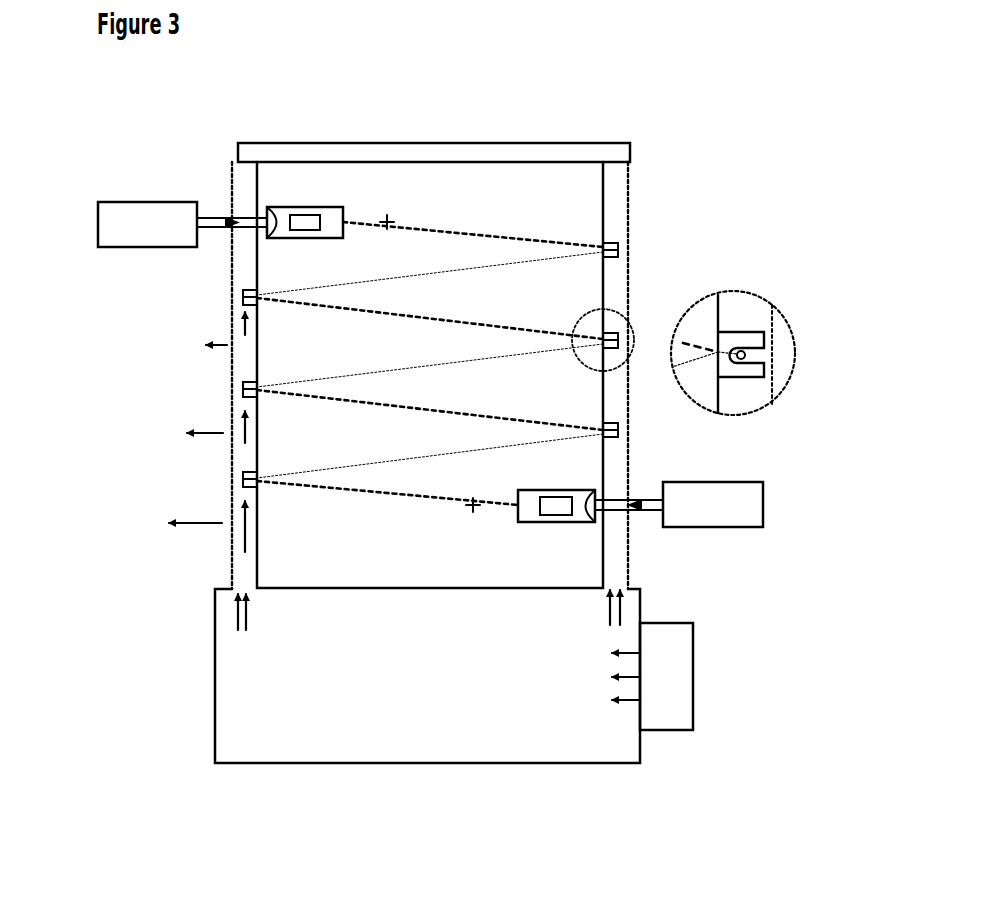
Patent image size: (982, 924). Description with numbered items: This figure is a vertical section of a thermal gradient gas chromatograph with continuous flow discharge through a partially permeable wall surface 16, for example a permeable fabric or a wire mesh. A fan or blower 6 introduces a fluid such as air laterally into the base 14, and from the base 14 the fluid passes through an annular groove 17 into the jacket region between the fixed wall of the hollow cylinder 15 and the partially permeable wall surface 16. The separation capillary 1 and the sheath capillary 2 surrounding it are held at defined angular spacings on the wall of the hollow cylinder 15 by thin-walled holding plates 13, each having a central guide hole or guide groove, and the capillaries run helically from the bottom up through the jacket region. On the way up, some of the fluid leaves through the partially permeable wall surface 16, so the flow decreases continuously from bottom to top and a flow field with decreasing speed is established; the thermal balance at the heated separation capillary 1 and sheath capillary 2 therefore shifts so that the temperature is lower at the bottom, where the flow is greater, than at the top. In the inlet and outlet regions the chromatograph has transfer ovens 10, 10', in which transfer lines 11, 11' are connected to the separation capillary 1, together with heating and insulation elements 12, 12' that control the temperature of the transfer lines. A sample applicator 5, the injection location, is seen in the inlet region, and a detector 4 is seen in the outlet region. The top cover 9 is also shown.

The separation capillary 1 is at (433, 375).
The sheath capillary 2 is at (541, 242).
The detector 4 is at (690, 500).
The sample applicator 5 is at (178, 218).
The blower 6 is at (672, 678).
The cover 9 is at (315, 150).
The transfer oven 10 is at (609, 478).
The transfer oven 10' is at (339, 203).
The transfer line 11 is at (618, 492).
The transfer line 11' is at (243, 205).
The heating and insulation element 12 is at (663, 539).
The heating and insulation element 12' is at (209, 255).
The holding plate 13 is at (737, 338).
The base 14 is at (250, 697).
The hollow cylinder 15 is at (603, 302).
The partially permeable wall surface 16 is at (630, 243).
The annular groove 17 is at (625, 590).